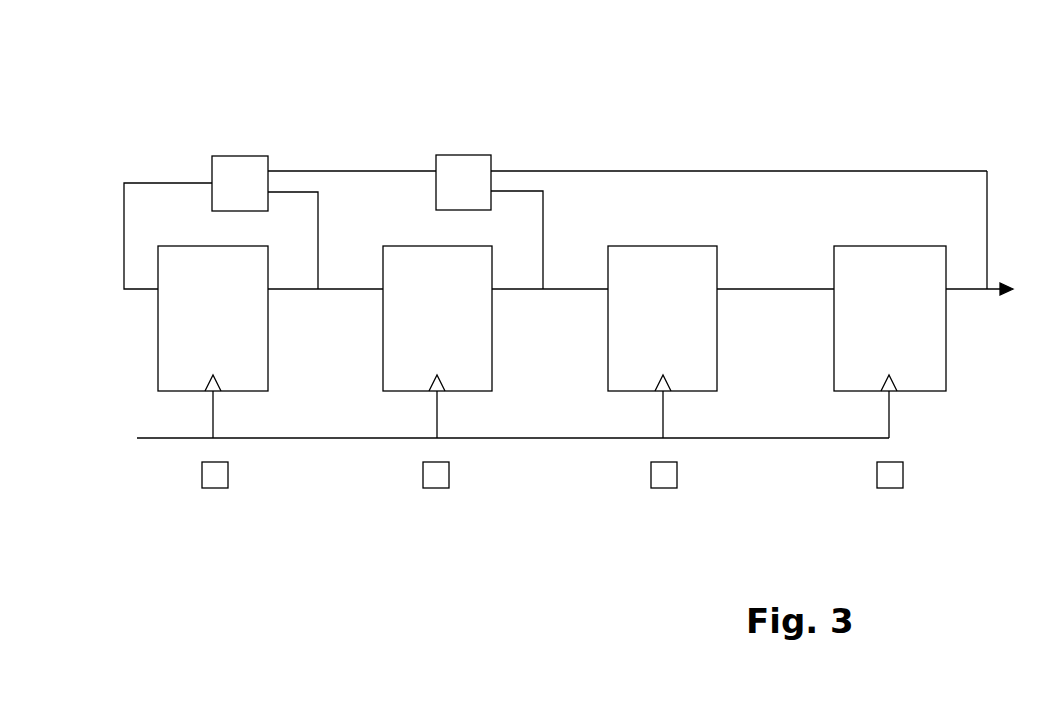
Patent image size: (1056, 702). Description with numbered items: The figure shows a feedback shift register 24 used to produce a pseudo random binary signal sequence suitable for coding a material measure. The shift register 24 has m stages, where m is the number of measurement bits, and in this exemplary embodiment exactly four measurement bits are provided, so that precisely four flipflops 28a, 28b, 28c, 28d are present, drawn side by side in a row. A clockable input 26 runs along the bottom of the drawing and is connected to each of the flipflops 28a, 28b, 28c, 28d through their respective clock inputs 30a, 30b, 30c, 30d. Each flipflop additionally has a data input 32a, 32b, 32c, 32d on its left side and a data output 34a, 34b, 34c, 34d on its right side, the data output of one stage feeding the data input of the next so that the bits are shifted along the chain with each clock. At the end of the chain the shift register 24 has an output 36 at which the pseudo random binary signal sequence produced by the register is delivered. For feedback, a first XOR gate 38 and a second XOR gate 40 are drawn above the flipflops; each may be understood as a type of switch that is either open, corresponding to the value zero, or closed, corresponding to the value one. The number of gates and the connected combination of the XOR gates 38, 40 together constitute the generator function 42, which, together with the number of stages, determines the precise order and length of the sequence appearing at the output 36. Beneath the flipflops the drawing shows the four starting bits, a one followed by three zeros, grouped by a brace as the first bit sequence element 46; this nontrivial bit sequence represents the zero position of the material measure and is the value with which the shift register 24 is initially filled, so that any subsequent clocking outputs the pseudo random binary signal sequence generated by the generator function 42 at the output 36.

The feedback shift register 24 is at (608, 88).
The clockable input 26 is at (157, 440).
The flipflop 28a is at (157, 347).
The flipflop 28b is at (383, 347).
The flipflop 28c is at (608, 345).
The flipflop 28d is at (834, 343).
The clock input 30a is at (208, 395).
The clock input 30b is at (432, 395).
The clock input 30c is at (658, 395).
The clock input 30d is at (884, 395).
The data input 32a is at (157, 295).
The data input 32b is at (380, 288).
The data input 32c is at (606, 288).
The data input 32d is at (832, 288).
The data output 34a is at (270, 292).
The data output 34b is at (494, 292).
The data output 34c is at (719, 292).
The data output 34d is at (947, 292).
The output 36 is at (992, 283).
The first XOR gate 38 is at (233, 156).
The second XOR gate 40 is at (445, 155).
The generator function 42 is at (297, 192).
The first bit sequence element 46 is at (903, 493).